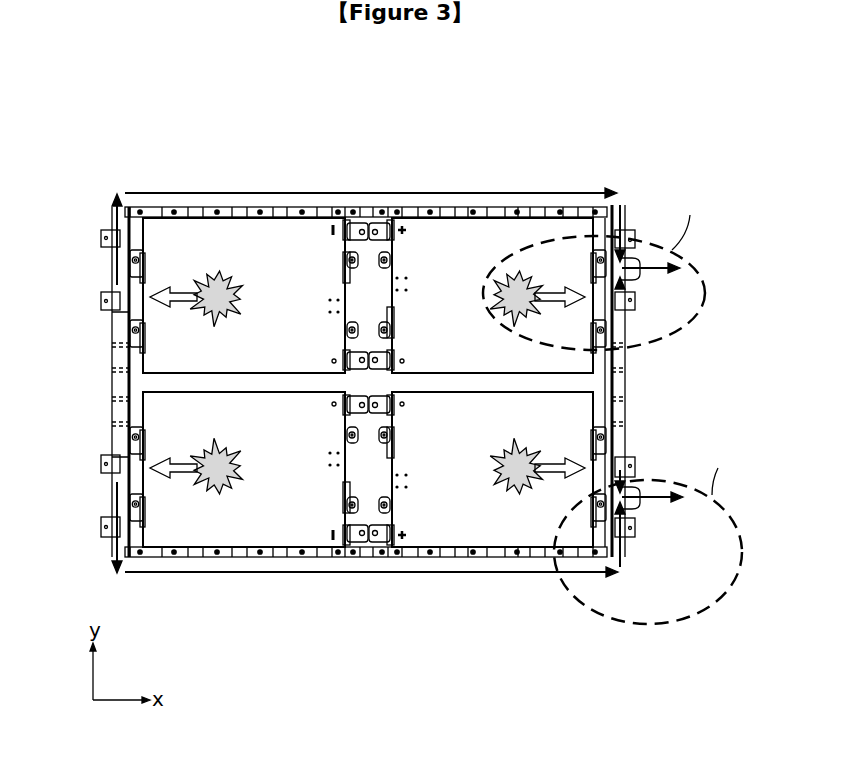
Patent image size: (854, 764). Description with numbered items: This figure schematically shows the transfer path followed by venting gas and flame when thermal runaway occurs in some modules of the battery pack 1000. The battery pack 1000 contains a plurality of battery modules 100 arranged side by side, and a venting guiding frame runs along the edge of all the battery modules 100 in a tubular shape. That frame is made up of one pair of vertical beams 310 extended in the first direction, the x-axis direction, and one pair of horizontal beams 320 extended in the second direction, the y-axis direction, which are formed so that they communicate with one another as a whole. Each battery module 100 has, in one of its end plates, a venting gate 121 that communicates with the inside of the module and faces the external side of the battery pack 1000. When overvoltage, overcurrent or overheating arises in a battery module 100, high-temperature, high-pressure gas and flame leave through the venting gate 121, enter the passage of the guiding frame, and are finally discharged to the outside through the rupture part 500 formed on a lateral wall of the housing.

The battery pack 1000 is at (173, 133).
The vertical beam 310 is at (280, 213).
The battery module 100 is at (453, 228).
The horizontal beam 320 is at (117, 328).
The venting gate 121 is at (132, 455).
The rupture part 500 is at (650, 480).